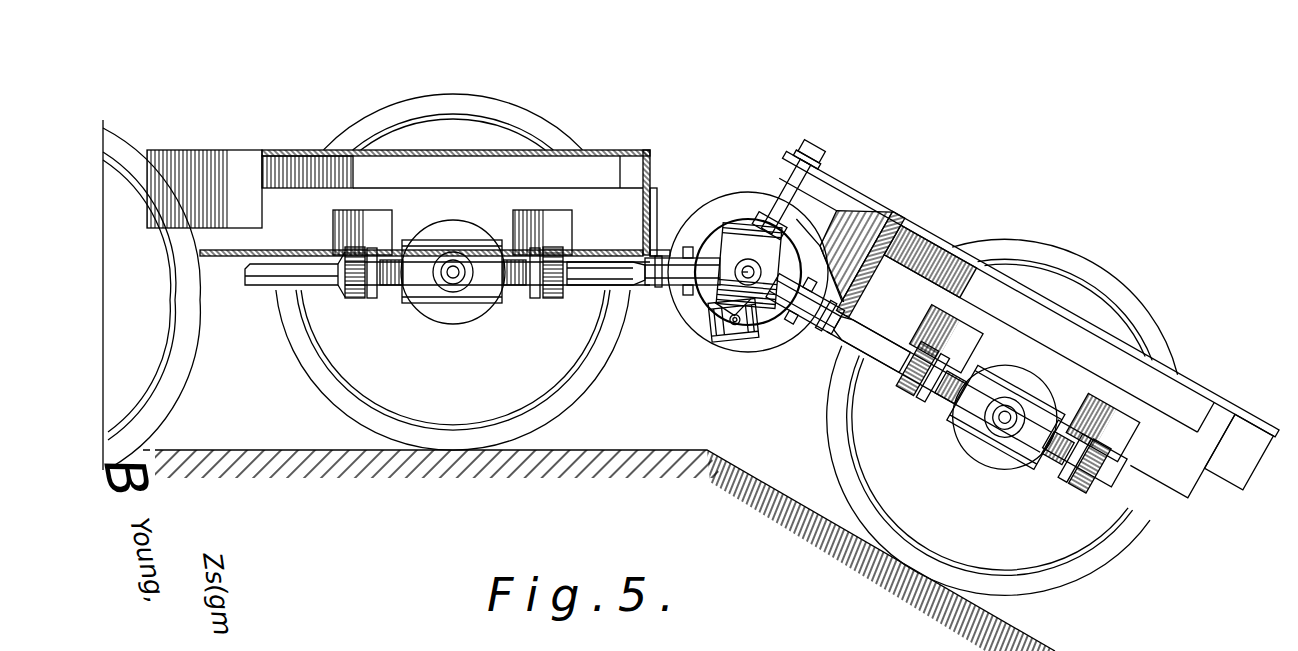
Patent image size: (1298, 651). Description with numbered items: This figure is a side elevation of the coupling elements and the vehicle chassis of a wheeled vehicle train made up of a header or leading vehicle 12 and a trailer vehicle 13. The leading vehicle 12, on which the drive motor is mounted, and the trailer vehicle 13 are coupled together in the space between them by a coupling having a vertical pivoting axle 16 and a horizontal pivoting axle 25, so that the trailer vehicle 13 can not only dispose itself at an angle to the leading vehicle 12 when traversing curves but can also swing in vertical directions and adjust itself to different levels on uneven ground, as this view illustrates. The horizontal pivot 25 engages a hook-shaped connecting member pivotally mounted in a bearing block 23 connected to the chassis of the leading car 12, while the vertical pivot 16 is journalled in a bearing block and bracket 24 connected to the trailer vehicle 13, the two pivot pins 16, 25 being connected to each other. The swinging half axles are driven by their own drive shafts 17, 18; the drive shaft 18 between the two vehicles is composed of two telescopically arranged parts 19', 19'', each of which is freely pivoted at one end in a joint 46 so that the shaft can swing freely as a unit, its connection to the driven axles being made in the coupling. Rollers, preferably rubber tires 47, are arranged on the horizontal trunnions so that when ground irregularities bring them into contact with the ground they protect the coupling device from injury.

The leading vehicle 12 is at (287, 150).
The trailer vehicle 13 is at (1208, 392).
The vertical pivoting axle 16 is at (822, 148).
The drive shaft 17 is at (267, 282).
The drive shaft 18 is at (598, 290).
The telescopic drive shaft part 19' is at (839, 329).
The telescopic drive shaft part 19'' is at (716, 283).
The bearing block 23 is at (700, 322).
The bearing block and bracket 24 is at (835, 203).
The horizontal pivoting axle 25 is at (742, 262).
The joint 46 is at (735, 242).
The rubber tire 47 is at (693, 323).